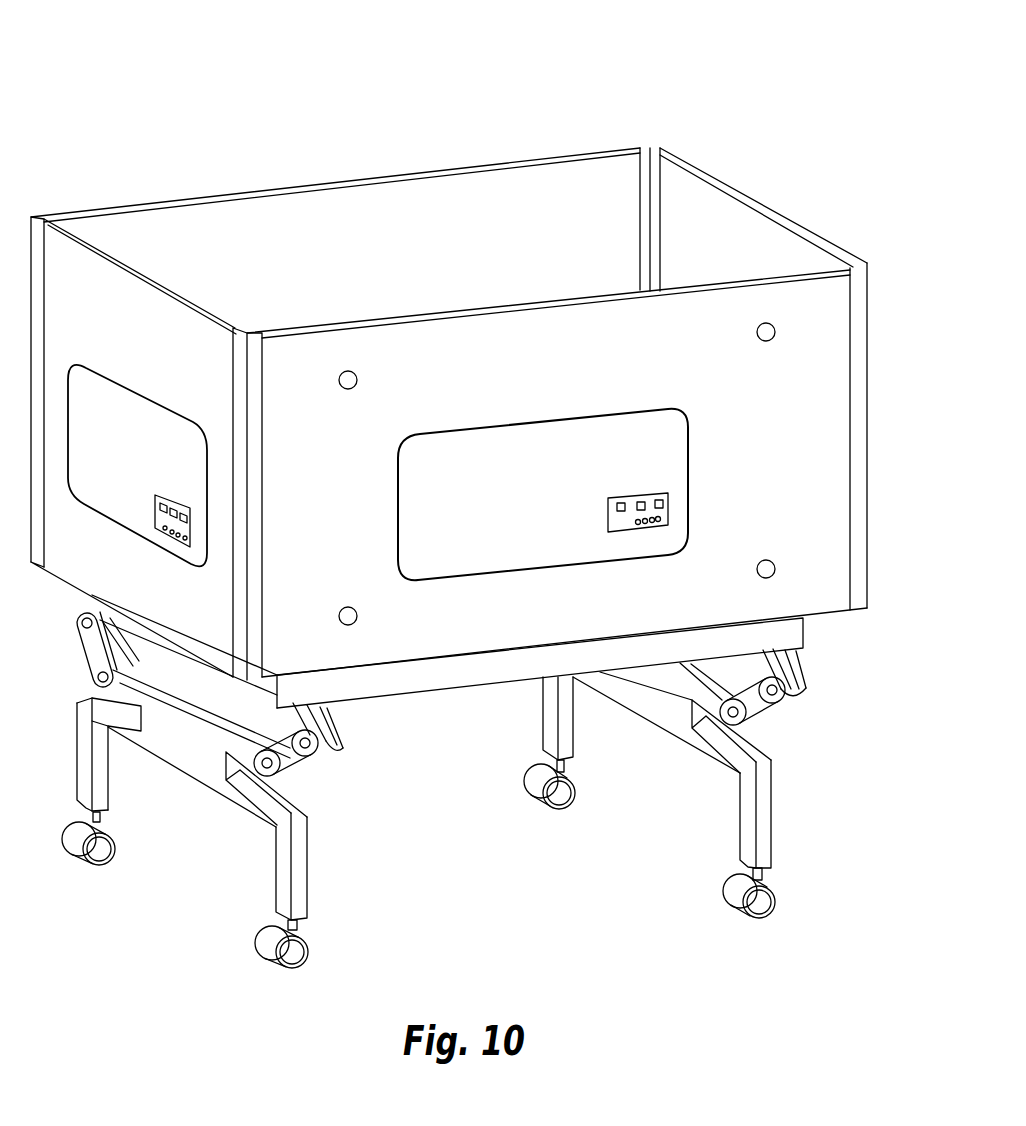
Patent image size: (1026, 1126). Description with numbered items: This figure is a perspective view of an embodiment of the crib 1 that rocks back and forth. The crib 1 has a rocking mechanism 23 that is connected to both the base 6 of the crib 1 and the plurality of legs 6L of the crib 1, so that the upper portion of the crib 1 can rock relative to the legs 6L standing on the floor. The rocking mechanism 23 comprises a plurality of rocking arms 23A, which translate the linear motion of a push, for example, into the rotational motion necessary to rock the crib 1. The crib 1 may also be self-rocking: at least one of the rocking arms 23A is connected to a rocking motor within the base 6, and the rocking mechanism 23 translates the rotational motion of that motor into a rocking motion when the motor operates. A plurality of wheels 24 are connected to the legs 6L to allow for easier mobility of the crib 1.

The crib 1 is at (40, 146).
The base 6 is at (432, 692).
The legs 6L is at (308, 867).
The rocking mechanism 23 is at (832, 681).
The rocking arms 23A is at (313, 767).
The wheels 24 is at (758, 918).